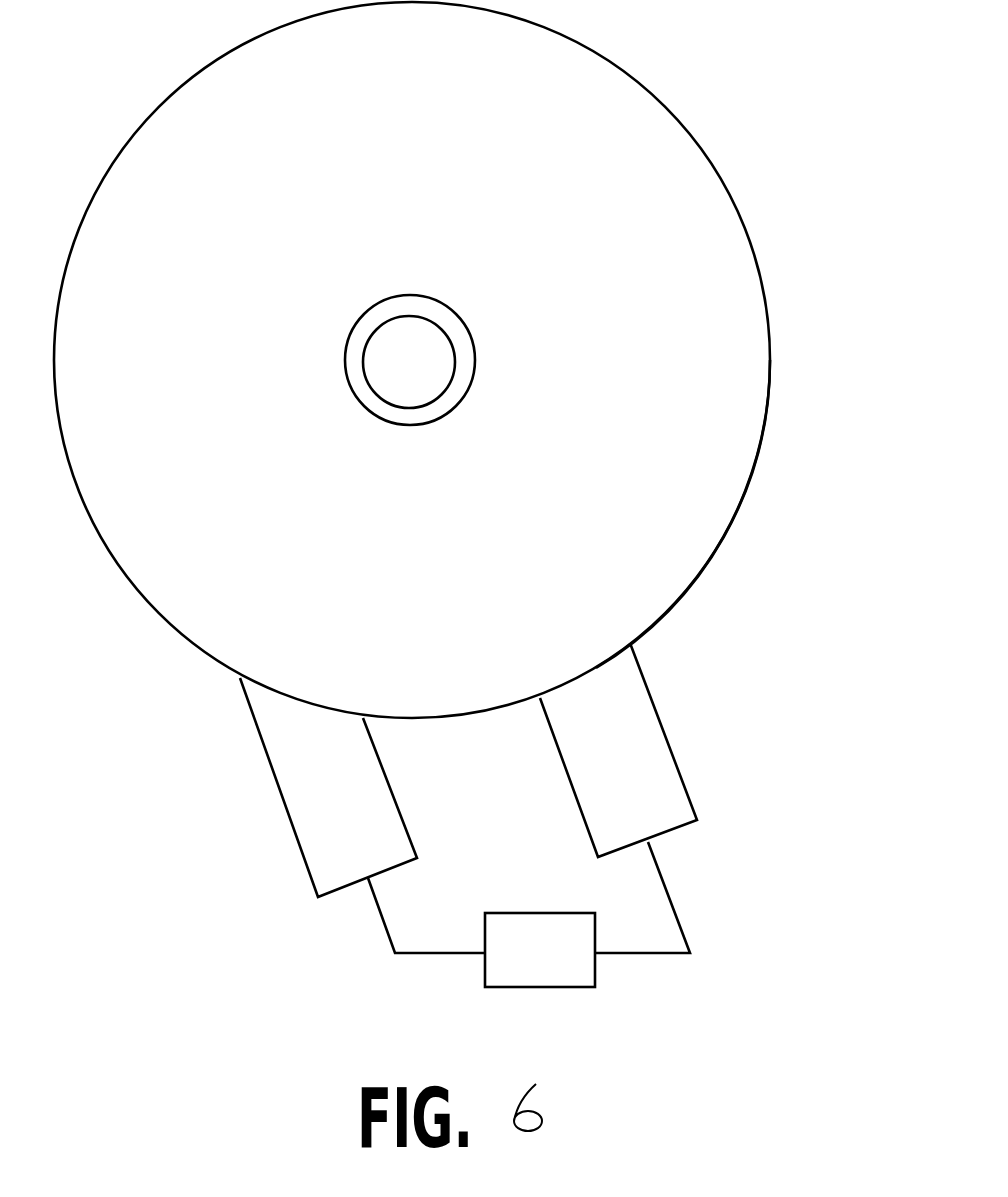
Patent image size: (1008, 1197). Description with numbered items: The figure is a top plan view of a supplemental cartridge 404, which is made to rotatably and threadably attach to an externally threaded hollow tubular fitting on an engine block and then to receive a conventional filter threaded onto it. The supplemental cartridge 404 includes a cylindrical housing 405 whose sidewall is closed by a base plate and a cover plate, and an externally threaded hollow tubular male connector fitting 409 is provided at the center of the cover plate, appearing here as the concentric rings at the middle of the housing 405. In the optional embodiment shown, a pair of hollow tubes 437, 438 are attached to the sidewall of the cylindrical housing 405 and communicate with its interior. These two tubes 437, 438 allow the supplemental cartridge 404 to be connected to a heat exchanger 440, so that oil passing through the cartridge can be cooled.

The supplemental cartridge 404 is at (735, 87).
The cylindrical housing 405 is at (710, 558).
The hollow tubular male connector fitting 409 is at (412, 425).
The hollow tube 437 is at (285, 805).
The hollow tube 438 is at (683, 775).
The heat exchanger 440 is at (567, 973).